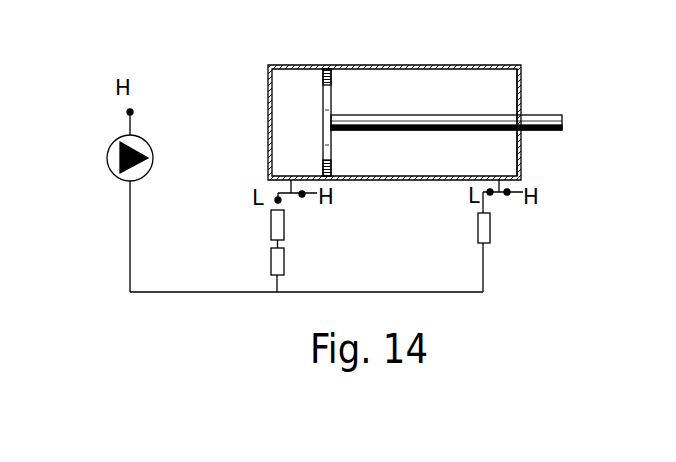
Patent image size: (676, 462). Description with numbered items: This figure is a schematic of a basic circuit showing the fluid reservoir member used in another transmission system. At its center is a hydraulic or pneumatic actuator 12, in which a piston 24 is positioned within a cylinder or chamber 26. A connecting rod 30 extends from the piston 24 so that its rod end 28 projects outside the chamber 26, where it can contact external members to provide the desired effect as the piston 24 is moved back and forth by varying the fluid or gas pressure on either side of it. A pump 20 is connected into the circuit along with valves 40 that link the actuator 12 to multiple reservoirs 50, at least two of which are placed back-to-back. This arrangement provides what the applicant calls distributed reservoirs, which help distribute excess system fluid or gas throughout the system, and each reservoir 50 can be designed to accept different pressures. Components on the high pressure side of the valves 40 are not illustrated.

The actuator 12 is at (493, 98).
The pump 20 is at (112, 173).
The piston 24 is at (323, 138).
The chamber 26 is at (515, 147).
The rod end 28 is at (562, 122).
The connecting rod 30 is at (452, 131).
The valve 40 is at (133, 112).
The reservoir 50 is at (271, 224).